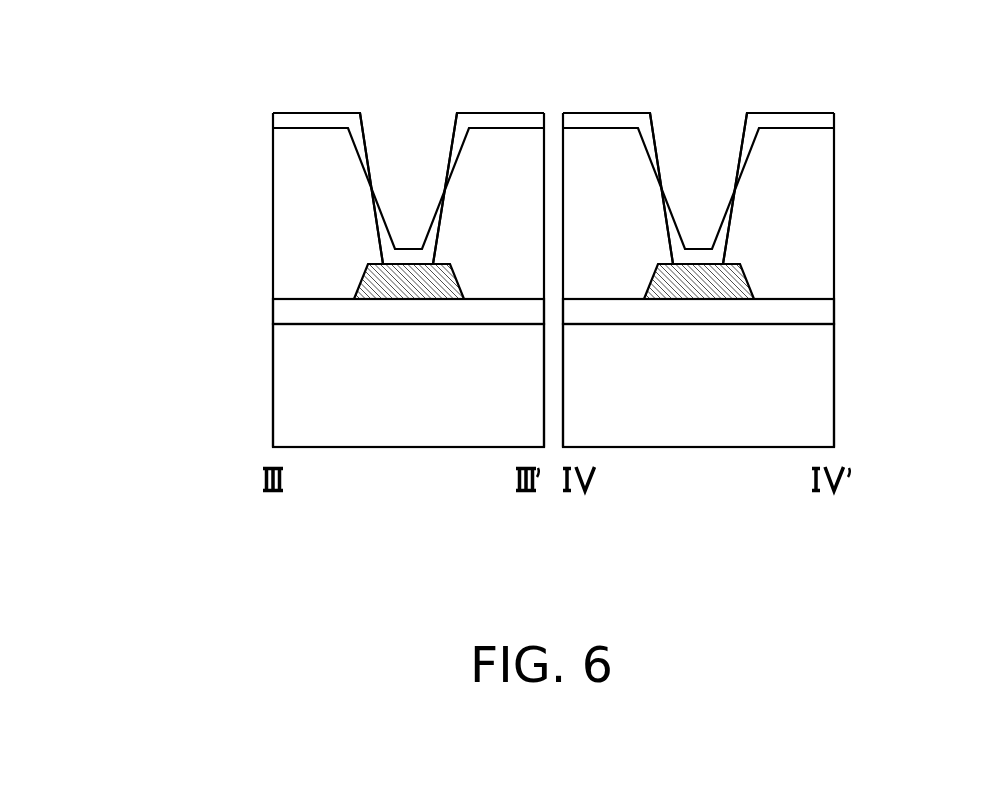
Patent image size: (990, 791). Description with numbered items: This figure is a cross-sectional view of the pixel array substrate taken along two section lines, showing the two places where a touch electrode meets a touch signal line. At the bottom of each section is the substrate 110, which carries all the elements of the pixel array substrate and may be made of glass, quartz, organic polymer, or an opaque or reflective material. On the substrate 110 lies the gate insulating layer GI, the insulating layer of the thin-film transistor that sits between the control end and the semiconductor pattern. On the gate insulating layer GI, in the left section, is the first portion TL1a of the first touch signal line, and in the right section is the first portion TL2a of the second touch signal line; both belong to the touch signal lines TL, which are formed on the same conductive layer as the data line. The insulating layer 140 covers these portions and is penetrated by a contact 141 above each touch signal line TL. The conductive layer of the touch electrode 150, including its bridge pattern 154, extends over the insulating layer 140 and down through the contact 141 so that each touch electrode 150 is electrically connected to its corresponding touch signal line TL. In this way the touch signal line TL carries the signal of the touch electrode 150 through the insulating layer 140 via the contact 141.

The substrate 110 is at (302, 388).
The gate insulating layer GI is at (302, 313).
The touch signal line TL is at (554, 275).
The first portion of the first touch signal line TL1a is at (382, 288).
The first portion of the second touch signal line TL2a is at (726, 289).
The insulating layer 140 is at (302, 190).
The contact 141 is at (368, 195).
The bridge pattern 154 is at (553, 185).
The touch electrode 150 is at (302, 121).